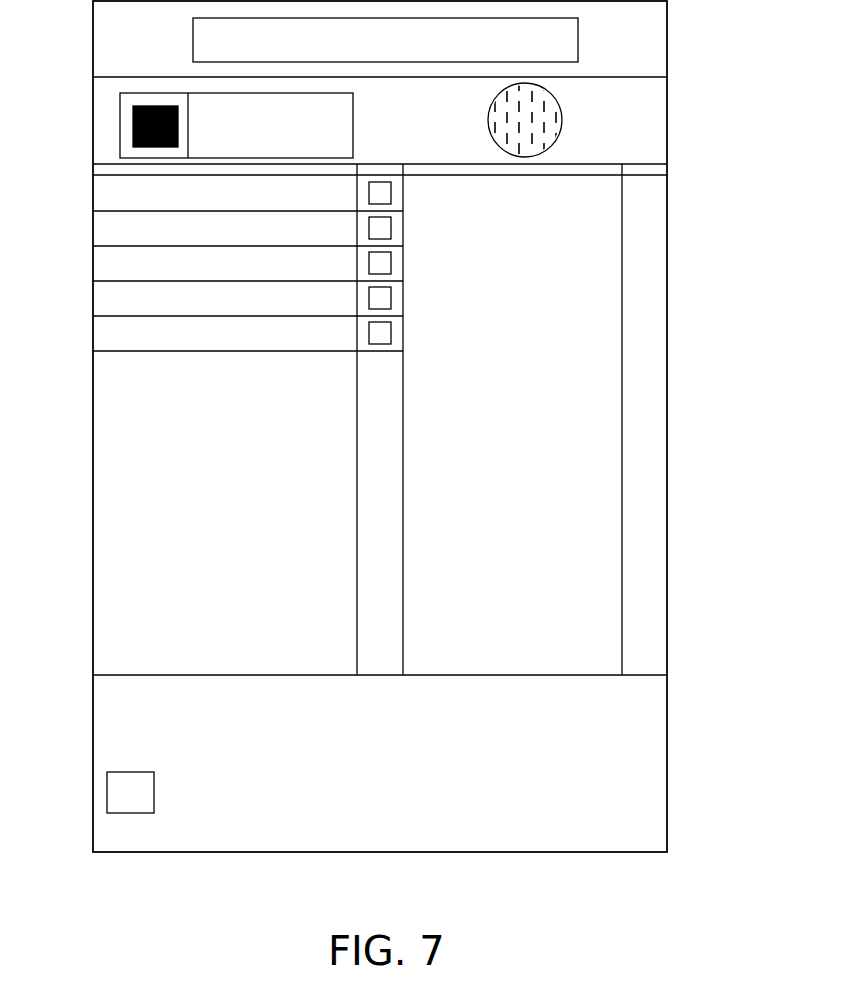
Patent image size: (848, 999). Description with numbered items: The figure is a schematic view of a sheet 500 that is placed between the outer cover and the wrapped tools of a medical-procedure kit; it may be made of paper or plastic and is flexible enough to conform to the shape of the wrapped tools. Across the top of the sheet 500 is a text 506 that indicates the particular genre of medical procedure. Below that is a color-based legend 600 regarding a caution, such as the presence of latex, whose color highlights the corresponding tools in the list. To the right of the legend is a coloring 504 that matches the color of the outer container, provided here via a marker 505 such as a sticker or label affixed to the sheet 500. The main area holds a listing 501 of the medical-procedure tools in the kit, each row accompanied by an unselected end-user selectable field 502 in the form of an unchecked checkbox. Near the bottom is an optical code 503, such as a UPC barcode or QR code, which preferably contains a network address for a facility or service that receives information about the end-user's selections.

The sheet 500 is at (683, 837).
The listing 501 is at (93, 200).
The unselected end-user selectable field 502 is at (394, 192).
The optical code 503 is at (154, 793).
The coloring 504 is at (556, 132).
The marker 505 is at (490, 122).
The text 506 is at (578, 40).
The color-based legend 600 is at (120, 128).